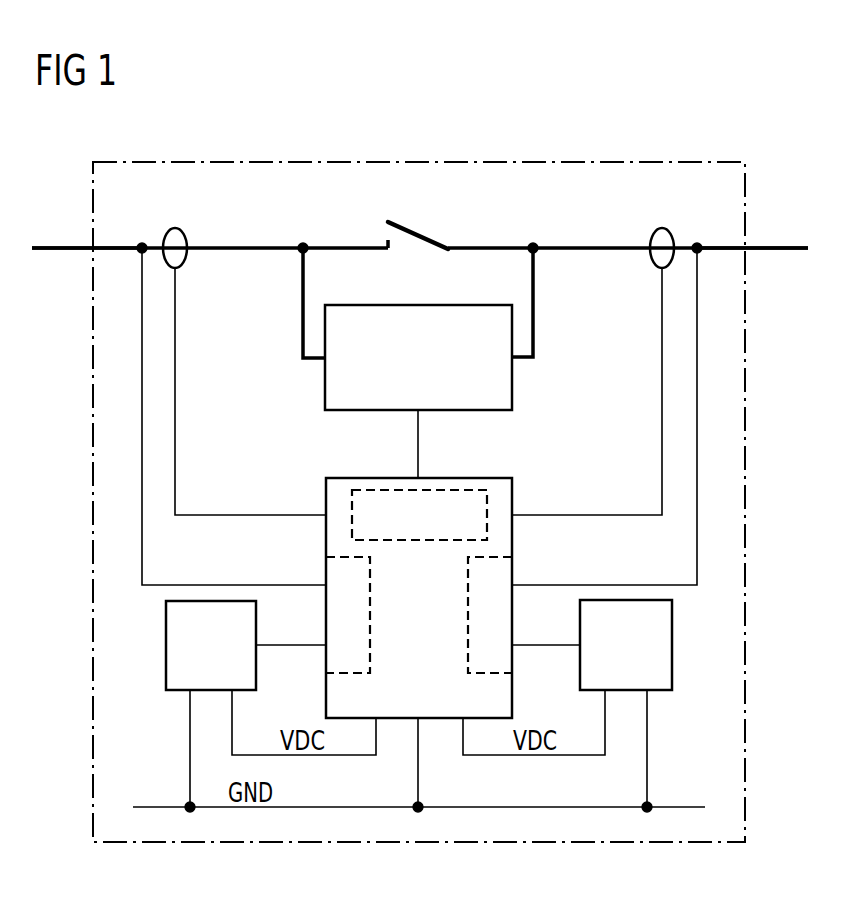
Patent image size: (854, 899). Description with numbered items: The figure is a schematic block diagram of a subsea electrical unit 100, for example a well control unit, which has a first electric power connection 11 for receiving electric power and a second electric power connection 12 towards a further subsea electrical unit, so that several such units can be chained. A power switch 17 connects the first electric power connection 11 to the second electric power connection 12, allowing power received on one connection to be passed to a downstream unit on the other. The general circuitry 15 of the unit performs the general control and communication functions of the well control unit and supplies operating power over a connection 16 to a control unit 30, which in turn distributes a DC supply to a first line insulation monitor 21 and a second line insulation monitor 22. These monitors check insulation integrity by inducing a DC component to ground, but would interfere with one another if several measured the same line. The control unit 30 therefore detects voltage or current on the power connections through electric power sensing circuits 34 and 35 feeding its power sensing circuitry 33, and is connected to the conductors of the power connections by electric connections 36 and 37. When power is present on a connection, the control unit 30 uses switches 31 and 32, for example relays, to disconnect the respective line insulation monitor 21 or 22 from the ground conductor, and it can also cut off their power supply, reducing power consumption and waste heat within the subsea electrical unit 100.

The subsea electrical unit 100 is at (340, 162).
The first electric power connection 11 is at (58, 245).
The second electric power connection 12 is at (780, 247).
The power switch 17 is at (420, 228).
The general circuitry 15 is at (513, 379).
The connection 16 is at (418, 445).
The control unit 30 is at (325, 495).
The switch 31 is at (370, 623).
The switch 32 is at (468, 647).
The power sensing circuitry 33 is at (418, 541).
The electric power sensing circuit 34 is at (178, 392).
The electric power sensing circuit 35 is at (662, 393).
The electric connection 36 is at (232, 583).
The electric connection 37 is at (606, 583).
The first line insulation monitor 21 is at (166, 647).
The second line insulation monitor 22 is at (672, 645).